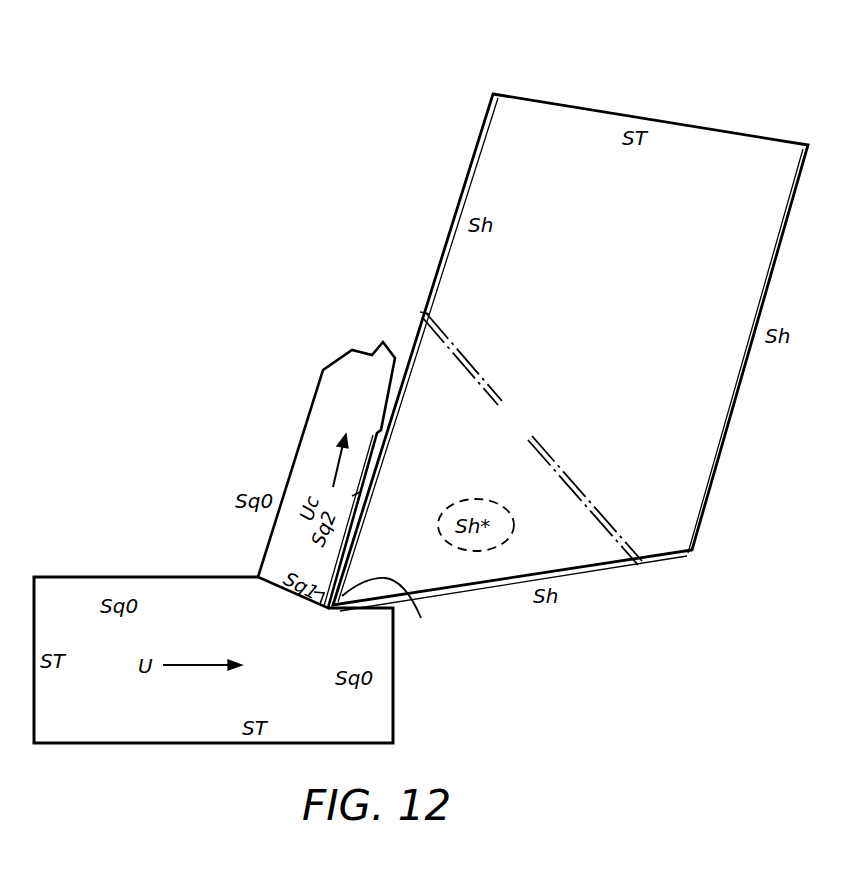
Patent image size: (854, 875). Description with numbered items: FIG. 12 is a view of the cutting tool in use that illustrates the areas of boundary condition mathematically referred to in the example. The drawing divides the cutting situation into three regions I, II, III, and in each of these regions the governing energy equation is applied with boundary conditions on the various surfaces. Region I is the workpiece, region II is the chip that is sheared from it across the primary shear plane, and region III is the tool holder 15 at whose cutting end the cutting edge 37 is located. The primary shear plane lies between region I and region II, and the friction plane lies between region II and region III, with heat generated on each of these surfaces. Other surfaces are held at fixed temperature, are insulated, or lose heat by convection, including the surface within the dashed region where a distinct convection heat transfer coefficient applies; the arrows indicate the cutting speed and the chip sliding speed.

The tool holder 15 is at (624, 294).
The cutting edge 37 is at (394, 606).
The region I is at (213, 660).
The region II is at (326, 475).
The region III is at (532, 439).